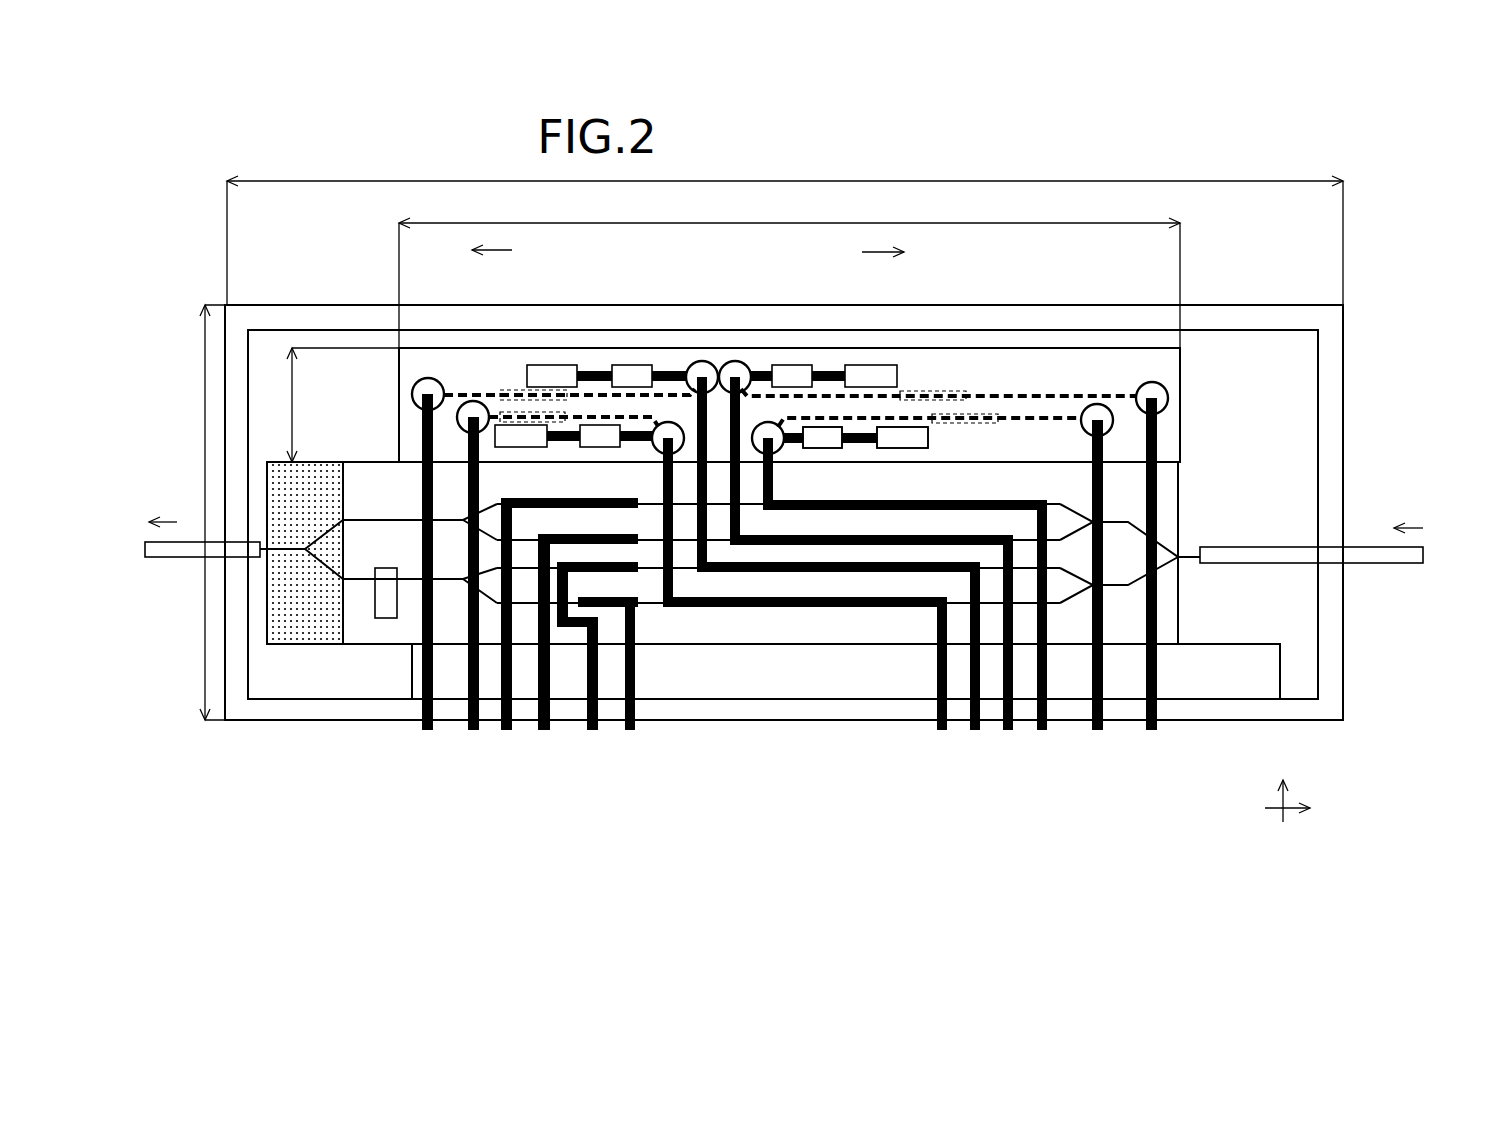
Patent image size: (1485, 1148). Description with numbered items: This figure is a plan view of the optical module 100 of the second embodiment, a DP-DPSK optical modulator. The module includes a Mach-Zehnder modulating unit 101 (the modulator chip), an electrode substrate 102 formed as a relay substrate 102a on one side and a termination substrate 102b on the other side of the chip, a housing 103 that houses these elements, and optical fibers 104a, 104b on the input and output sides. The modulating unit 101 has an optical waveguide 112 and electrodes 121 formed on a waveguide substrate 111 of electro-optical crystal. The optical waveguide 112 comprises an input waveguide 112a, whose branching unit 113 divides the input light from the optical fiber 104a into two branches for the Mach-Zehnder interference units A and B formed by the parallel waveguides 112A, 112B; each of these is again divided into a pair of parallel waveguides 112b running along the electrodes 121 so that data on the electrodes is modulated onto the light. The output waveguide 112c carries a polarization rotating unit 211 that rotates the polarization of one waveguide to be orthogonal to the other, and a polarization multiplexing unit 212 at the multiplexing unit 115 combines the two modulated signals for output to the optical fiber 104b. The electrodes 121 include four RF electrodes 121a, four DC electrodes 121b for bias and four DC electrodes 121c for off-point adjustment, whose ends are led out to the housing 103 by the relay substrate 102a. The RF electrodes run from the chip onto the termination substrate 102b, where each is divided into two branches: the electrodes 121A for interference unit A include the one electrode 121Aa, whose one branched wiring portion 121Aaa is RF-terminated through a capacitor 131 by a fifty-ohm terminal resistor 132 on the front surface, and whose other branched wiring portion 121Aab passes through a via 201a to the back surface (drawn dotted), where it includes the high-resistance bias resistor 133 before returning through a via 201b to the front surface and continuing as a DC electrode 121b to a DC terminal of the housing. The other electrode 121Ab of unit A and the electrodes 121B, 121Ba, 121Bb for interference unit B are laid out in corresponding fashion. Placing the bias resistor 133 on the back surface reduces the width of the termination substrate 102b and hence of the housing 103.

The optical module 100 is at (784, 527).
The Mach-Zehnder modulating unit 101 is at (1198, 480).
The electrode substrate 102 is at (1198, 372).
The relay substrate 102a is at (1252, 648).
The termination substrate 102b is at (1135, 362).
The housing 103 is at (835, 713).
The optical fiber 104a is at (1387, 563).
The optical fiber 104b is at (180, 558).
The waveguide substrate 111 is at (787, 626).
The optical waveguide 112 is at (1080, 510).
The input waveguide 112a is at (1127, 512).
The parallel waveguides 112b is at (778, 663).
The parallel waveguide 112A is at (622, 530).
The parallel waveguide 112B is at (708, 587).
The output waveguide 112c is at (460, 507).
The branching unit 113 is at (1178, 560).
The multiplexing unit 115 is at (250, 558).
The electrodes 121 is at (789, 635).
The RF electrodes 121a is at (857, 610).
The DC electrodes for bias 121b is at (1122, 817).
The DC electrodes for off-point adjustment 121c is at (495, 792).
The first termination wiring 121A is at (938, 386).
The electrode 121Aa is at (940, 440).
The one wiring portion 121Aaa is at (840, 450).
The other wiring portion 121Aab is at (1057, 424).
The first termination upper connection pad 121Ab is at (905, 379).
The second termination wiring 121B is at (510, 360).
The second termination lower connection pad 121Ba is at (450, 421).
The second termination upper connection pad 121Bb is at (496, 380).
The capacitor 131 is at (782, 364).
The terminal resistor 132 is at (871, 364).
The bias resistor 133 is at (1213, 268).
The via 201a is at (733, 362).
The via 201b is at (1095, 409).
The polarization rotating unit 211 is at (387, 608).
The polarization multiplexing unit 212 is at (300, 608).